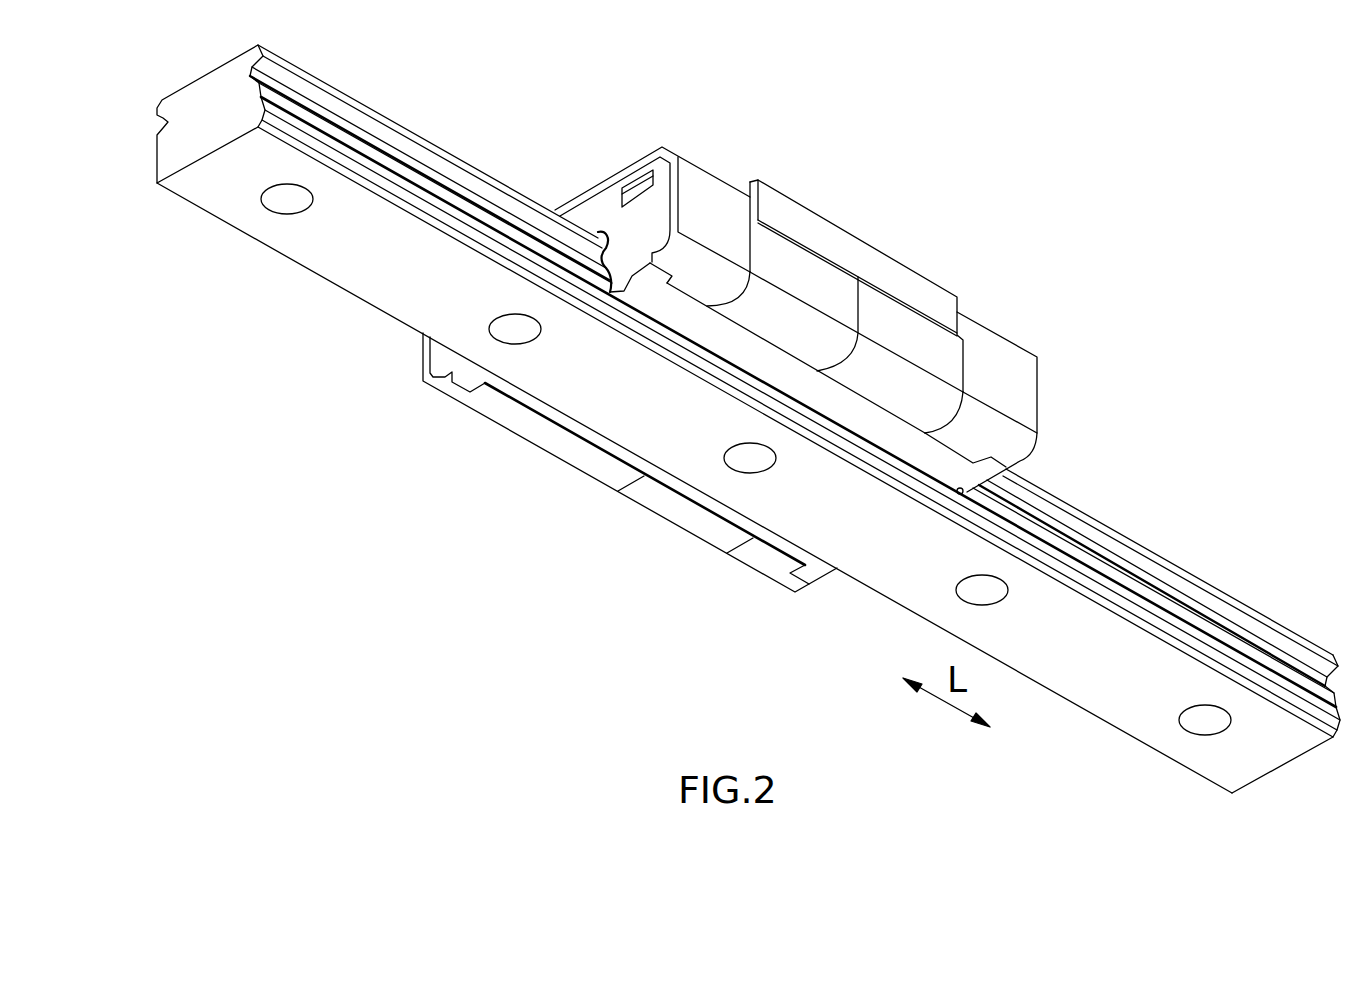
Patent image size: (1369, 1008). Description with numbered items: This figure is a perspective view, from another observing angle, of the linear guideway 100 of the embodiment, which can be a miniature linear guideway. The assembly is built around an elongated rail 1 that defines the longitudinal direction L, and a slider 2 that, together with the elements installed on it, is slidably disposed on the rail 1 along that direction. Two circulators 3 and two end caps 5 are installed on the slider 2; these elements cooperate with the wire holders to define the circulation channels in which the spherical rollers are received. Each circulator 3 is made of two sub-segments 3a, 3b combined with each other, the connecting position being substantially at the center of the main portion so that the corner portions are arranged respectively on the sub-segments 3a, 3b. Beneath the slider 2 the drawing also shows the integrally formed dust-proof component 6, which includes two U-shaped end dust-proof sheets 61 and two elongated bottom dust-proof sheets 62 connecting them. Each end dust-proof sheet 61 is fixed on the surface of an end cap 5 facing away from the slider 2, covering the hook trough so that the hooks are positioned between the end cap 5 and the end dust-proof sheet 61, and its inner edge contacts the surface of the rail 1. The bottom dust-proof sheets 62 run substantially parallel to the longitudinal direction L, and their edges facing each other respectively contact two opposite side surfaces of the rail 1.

The linear guideway 100 is at (1246, 97).
The rail 1 is at (440, 143).
The slider 2 is at (933, 282).
The circulator 3 is at (922, 203).
The sub-segment 3a is at (797, 263).
The sub-segment 3b is at (895, 320).
The end cap 5 is at (702, 167).
The dust-proof component 6 is at (446, 476).
The end dust-proof sheet 61 is at (438, 350).
The bottom dust-proof sheet 62 is at (518, 397).